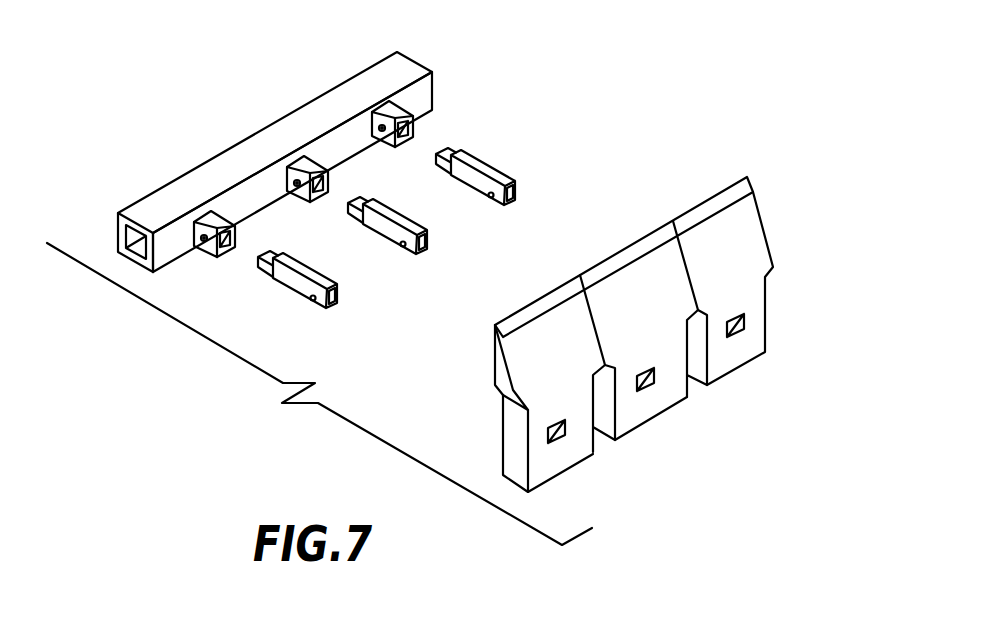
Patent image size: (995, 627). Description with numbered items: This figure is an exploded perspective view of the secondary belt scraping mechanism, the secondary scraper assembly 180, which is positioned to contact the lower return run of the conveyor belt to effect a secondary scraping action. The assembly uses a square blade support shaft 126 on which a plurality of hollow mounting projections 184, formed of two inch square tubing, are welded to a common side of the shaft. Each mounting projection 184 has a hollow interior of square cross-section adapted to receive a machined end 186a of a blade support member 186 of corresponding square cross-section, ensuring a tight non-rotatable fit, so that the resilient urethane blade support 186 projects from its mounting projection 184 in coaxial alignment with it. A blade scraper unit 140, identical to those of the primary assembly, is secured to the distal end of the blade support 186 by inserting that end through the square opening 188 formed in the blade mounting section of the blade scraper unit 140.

The square blade support shaft 126 is at (338, 72).
The hollow mounting projection 184 is at (300, 162).
The blade support member 186 is at (388, 247).
The machined end of blade support member 186a is at (365, 220).
The blade scraper unit 140 is at (794, 226).
The square opening 188 is at (557, 425).
The secondary scraper assembly 180 is at (272, 428).